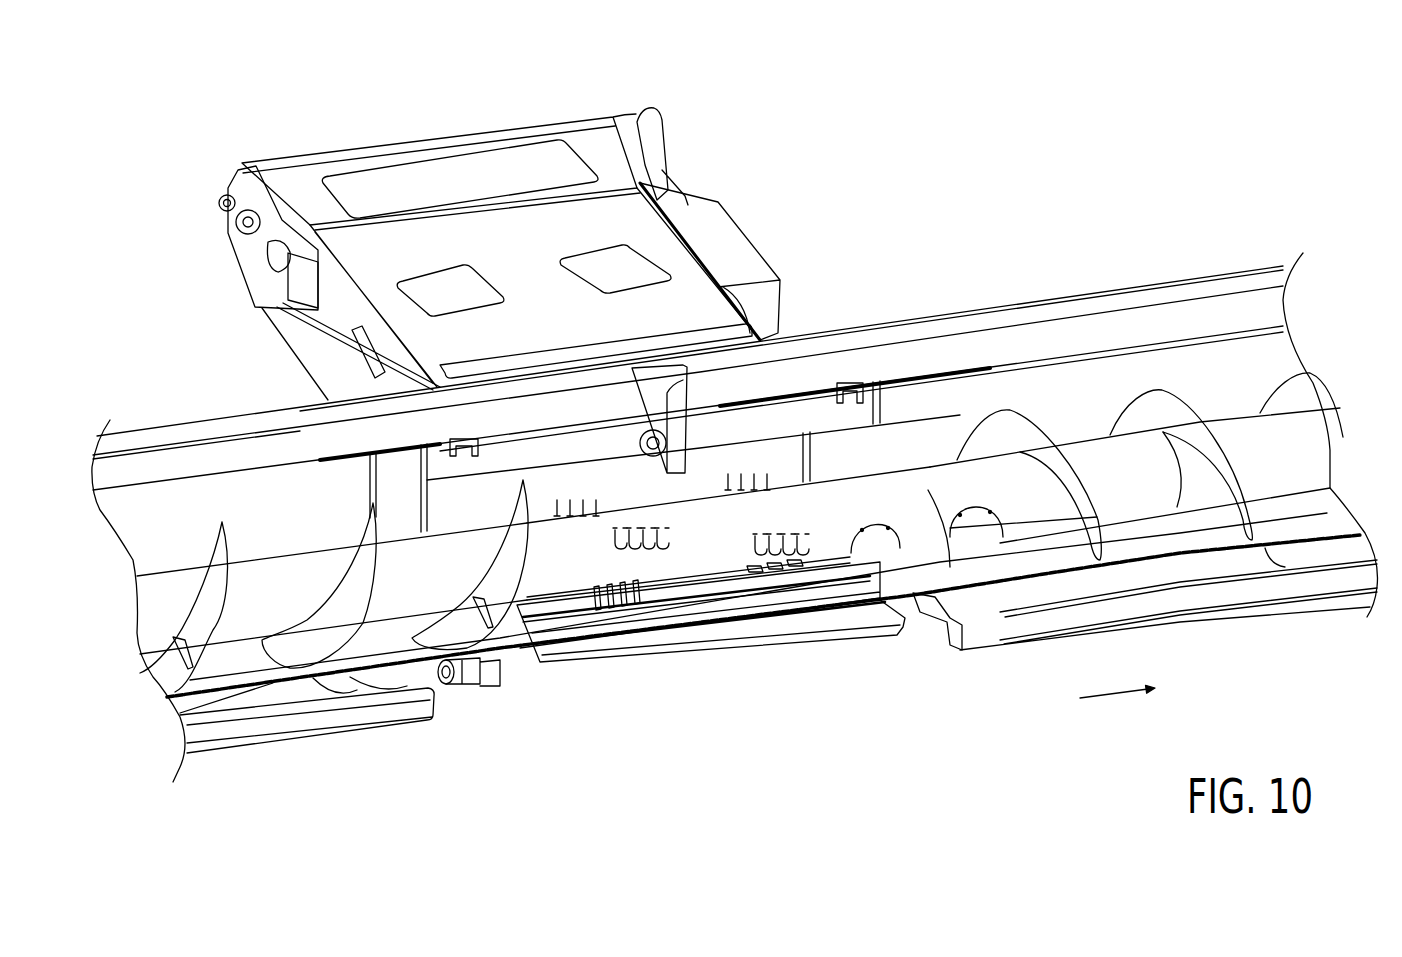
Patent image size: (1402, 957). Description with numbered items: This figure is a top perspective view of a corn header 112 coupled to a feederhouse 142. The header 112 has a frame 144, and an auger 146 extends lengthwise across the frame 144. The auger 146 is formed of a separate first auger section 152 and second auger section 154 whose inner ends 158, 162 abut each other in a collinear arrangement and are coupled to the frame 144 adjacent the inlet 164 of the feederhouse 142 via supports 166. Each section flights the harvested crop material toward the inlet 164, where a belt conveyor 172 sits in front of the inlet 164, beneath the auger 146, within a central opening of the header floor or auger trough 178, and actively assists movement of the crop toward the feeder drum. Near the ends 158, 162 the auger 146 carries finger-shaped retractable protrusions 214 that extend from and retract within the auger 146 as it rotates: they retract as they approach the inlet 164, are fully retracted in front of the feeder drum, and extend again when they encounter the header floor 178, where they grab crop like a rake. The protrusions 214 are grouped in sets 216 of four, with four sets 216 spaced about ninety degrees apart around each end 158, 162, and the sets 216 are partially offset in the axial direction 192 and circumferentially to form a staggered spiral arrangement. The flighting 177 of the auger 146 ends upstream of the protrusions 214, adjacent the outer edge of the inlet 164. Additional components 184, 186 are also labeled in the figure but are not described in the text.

The header 112 is at (211, 406).
The feederhouse 142 is at (779, 234).
The frame 144 is at (170, 428).
The auger 146 is at (398, 596).
The first auger section 152 is at (293, 610).
The second auger section 154 is at (1138, 502).
The end of first auger section 158 is at (693, 497).
The end of second auger section 162 is at (708, 557).
The inlet 164 is at (540, 500).
The supports 166 is at (667, 473).
The belt conveyor 172 is at (736, 620).
The flighting 177 is at (475, 688).
The header floor 178 is at (997, 550).
The slats 184 is at (777, 598).
The rail 186 is at (622, 628).
The axial direction 192 is at (1114, 696).
The retractable protrusions 214 is at (813, 560).
The sets of protrusions 216 is at (815, 523).